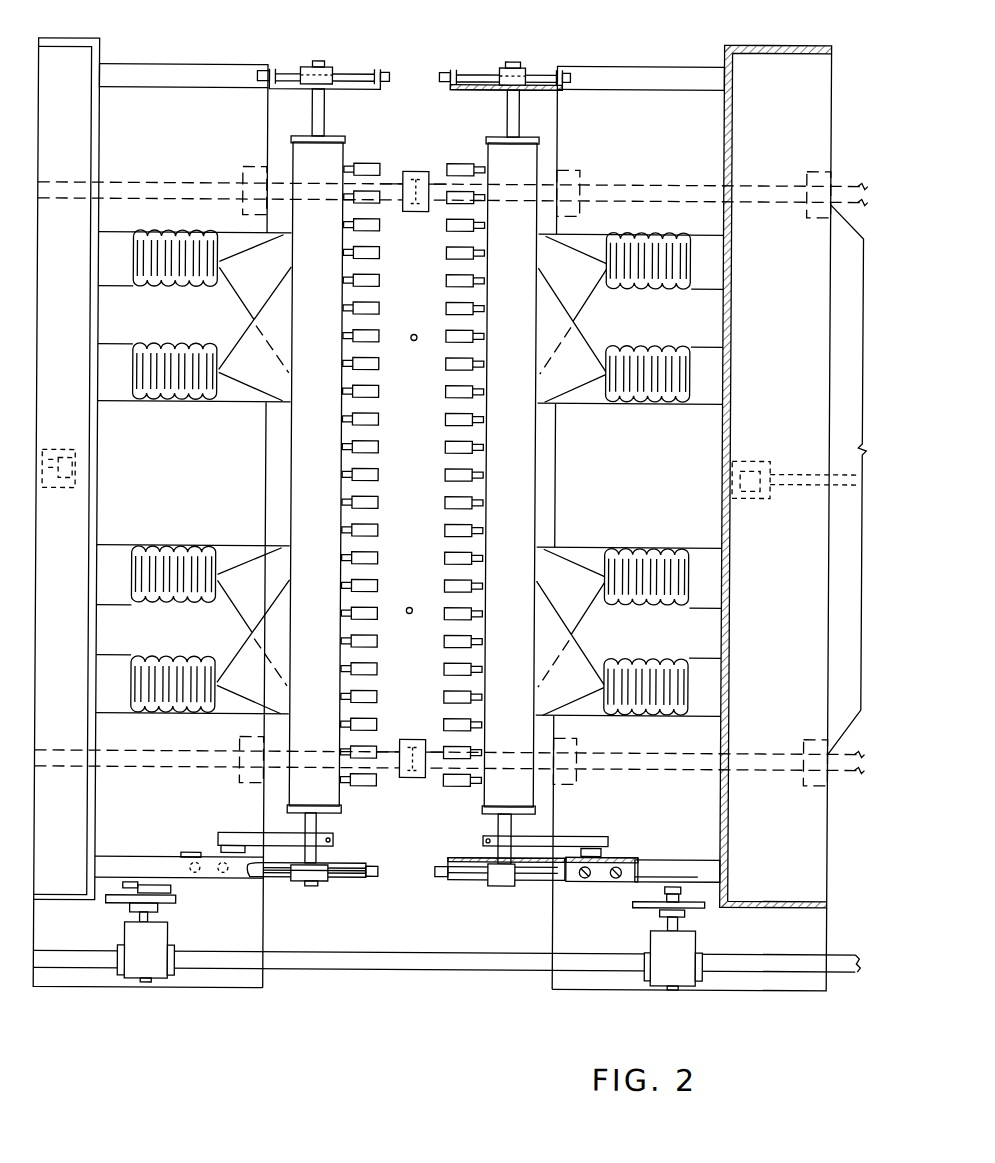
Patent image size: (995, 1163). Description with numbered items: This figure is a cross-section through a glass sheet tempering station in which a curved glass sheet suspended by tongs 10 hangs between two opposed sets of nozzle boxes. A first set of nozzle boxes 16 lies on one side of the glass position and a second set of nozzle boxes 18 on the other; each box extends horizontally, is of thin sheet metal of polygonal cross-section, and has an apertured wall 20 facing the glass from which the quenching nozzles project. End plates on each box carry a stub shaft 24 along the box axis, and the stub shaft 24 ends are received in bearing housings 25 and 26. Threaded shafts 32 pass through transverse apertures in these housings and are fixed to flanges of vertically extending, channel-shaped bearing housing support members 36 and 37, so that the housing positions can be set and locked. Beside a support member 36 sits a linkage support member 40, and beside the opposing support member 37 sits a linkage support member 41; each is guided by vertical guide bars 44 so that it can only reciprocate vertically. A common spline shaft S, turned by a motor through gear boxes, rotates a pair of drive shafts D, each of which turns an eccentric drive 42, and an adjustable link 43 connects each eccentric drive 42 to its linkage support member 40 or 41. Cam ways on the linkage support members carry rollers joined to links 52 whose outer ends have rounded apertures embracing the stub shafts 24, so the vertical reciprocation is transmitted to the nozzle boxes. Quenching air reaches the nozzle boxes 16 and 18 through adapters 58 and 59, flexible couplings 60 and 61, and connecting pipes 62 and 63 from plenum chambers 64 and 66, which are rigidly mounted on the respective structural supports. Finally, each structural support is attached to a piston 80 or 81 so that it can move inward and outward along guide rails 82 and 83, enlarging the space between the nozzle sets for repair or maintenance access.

The tongs 10 is at (414, 341).
The first set of nozzle boxes 16 is at (300, 247).
The second set of nozzle boxes 18 is at (496, 252).
The apertured wall 20 is at (350, 268).
The stub shaft 24 is at (518, 105).
The bearing housing 25 is at (322, 62).
The bearing housing 26 is at (321, 887).
The threaded shaft 32 is at (350, 878).
The bearing housing support member 36 is at (363, 98).
The bearing housing support member 37 is at (488, 102).
The linkage support member 40 is at (186, 854).
The linkage support member 41 is at (640, 857).
The eccentric drive 42 is at (705, 901).
The adjustable link 43 is at (132, 884).
The vertical guide bar 44 is at (200, 877).
The link 52 is at (250, 834).
The adapter 58 is at (219, 312).
The adapter 59 is at (580, 233).
The flexible coupling 60 is at (150, 233).
The flexible coupling 61 is at (620, 233).
The connecting pipe 62 is at (108, 233).
The connecting pipe 63 is at (712, 293).
The plenum chamber 64 is at (46, 294).
The plenum chamber 66 is at (763, 294).
The piston 80 is at (44, 452).
The piston 81 is at (798, 472).
The guide rail 82 is at (383, 184).
The guide rail 83 is at (437, 206).
The drive shaft D is at (160, 920).
The spline shaft S is at (378, 970).